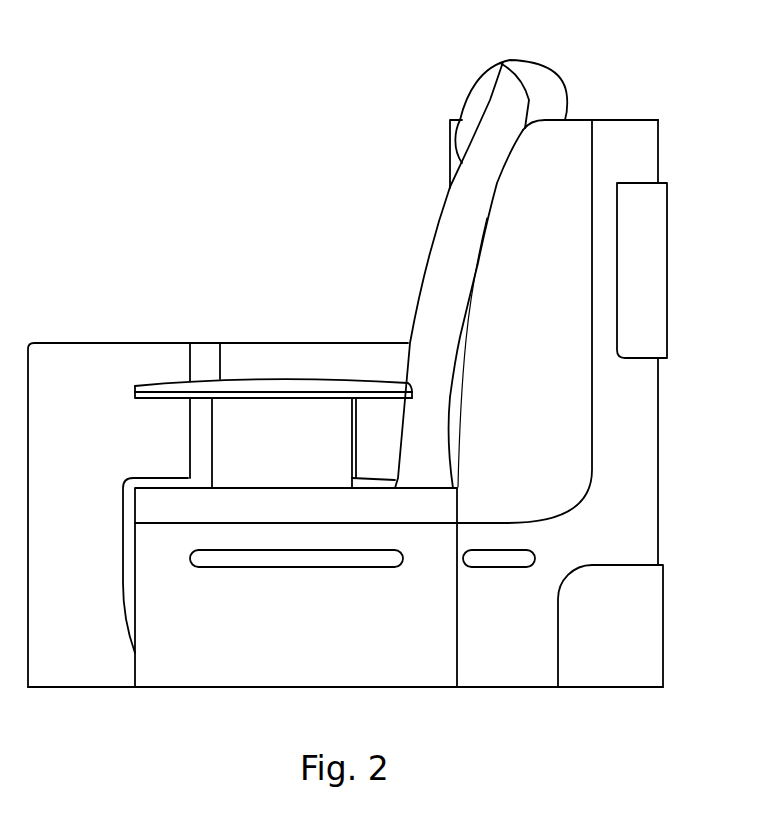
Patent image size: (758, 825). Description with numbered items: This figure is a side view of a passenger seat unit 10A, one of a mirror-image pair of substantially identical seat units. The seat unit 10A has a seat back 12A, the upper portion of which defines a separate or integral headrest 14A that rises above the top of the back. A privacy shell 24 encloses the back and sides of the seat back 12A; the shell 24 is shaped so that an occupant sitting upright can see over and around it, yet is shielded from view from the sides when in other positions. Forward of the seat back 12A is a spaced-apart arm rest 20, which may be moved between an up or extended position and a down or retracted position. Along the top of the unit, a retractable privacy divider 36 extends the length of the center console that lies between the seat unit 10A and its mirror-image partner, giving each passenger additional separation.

The seat unit 10A is at (627, 100).
The seat back 12A is at (437, 272).
The headrest 14A is at (490, 78).
The arm rest 20 is at (313, 427).
The privacy shell 24 is at (637, 450).
The retractable privacy divider 36 is at (328, 342).